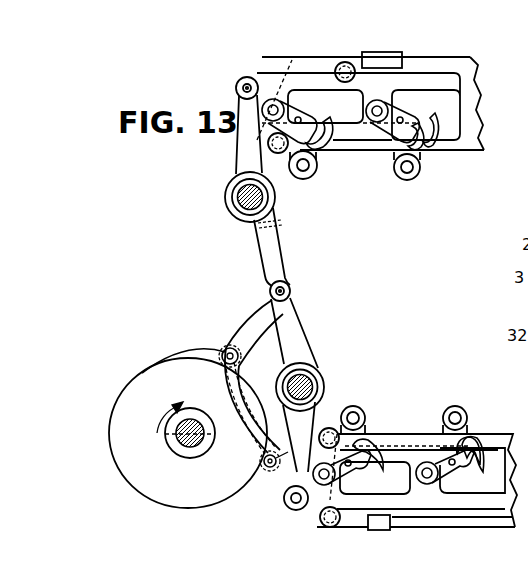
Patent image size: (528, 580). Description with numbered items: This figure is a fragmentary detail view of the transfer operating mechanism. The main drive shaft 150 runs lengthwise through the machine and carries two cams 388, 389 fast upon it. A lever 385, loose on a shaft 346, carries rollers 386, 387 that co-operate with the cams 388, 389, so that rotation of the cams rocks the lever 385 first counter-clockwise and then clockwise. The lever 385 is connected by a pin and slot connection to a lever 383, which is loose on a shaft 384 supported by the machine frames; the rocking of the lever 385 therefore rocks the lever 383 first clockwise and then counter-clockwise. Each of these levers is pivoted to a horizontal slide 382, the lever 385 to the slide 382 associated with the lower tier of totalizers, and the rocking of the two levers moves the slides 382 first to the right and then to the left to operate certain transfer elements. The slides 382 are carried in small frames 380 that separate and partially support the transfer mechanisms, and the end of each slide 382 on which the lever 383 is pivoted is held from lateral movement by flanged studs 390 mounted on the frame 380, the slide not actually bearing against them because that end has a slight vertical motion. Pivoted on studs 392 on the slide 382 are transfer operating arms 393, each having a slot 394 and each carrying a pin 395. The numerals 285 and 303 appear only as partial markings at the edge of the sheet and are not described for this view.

The main drive shaft 150 is at (193, 446).
The element (partial, adjacent figure) 285 is at (527, 211).
The element (partial, adjacent figure) 303 is at (527, 183).
The shaft 346 is at (315, 383).
The frame 380 is at (470, 65).
The horizontal slide 382 is at (354, 138).
The lever 383 is at (250, 144).
The shaft 384 is at (262, 204).
The lever 385 is at (292, 326).
The roller 386 is at (270, 471).
The roller 387 is at (224, 354).
The cam 388 is at (134, 380).
The cam 389 is at (188, 353).
The flanged stud 390 is at (340, 63).
The stud 392 is at (324, 485).
The transfer operating arm 393 is at (310, 126).
The slot 394 is at (434, 122).
The pin 395 is at (399, 117).